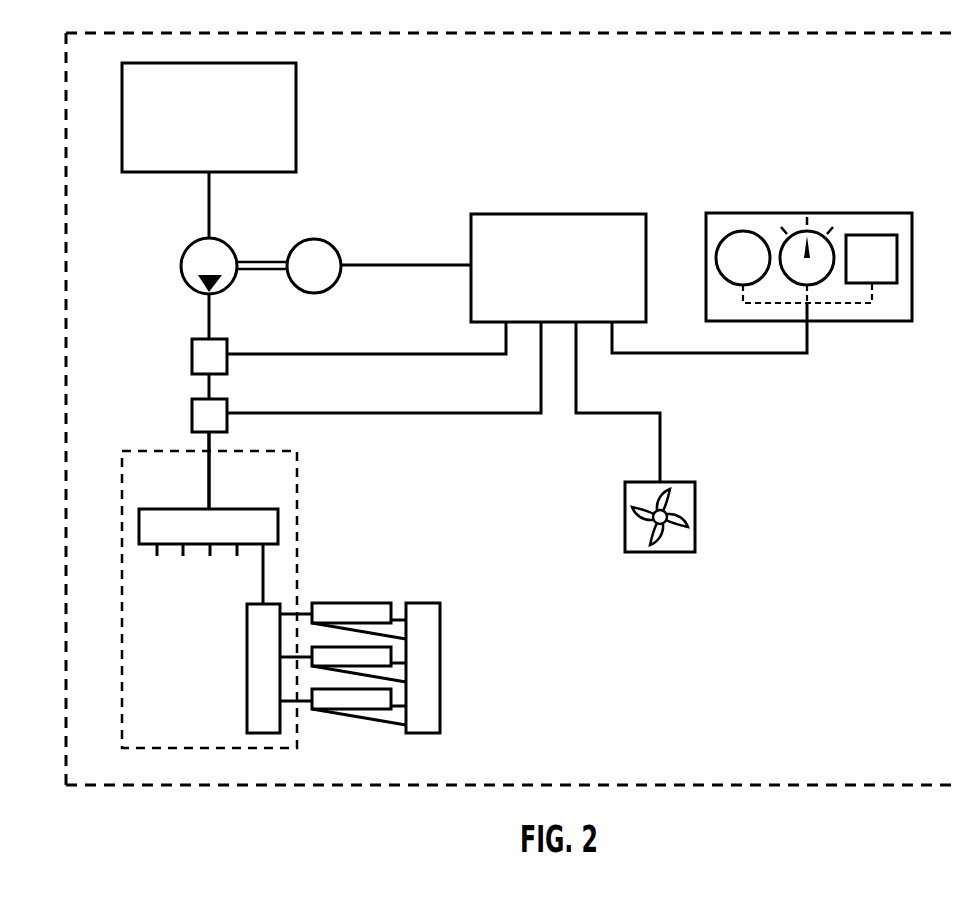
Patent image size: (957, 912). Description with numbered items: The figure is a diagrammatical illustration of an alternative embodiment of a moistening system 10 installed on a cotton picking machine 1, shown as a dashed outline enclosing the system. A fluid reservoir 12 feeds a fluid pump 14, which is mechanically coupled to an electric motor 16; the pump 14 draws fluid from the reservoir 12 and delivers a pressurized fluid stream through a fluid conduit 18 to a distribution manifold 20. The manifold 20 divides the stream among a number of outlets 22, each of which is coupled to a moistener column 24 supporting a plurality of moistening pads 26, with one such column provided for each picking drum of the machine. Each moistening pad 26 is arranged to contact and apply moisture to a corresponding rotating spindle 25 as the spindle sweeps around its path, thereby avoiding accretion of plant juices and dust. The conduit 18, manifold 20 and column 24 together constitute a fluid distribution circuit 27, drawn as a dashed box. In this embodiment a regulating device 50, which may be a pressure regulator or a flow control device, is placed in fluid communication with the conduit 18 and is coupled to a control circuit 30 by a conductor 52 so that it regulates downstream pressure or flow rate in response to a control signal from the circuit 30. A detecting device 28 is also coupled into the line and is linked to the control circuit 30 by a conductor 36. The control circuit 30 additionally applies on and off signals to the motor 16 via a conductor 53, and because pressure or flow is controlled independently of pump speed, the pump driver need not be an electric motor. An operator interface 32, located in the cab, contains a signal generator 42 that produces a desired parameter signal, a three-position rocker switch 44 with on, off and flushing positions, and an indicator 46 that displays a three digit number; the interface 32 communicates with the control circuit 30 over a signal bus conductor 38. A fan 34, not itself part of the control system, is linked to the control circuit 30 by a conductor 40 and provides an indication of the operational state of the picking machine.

The cotton picking machine 1 is at (231, 786).
The moistening system 10 is at (580, 93).
The fluid reservoir 12 is at (296, 106).
The fluid pump 14 is at (236, 256).
The electric motor 16 is at (341, 256).
The fluid conduit 18 is at (212, 500).
The distribution manifold 20 is at (178, 509).
The outlets 22 is at (262, 562).
The moistener column 24 is at (247, 652).
The spindle 25 is at (390, 670).
The moistening pads 26 is at (346, 655).
The fluid distribution circuit 27 is at (297, 492).
The detecting device 28 is at (227, 408).
The control circuit 30 is at (646, 258).
The operator interface 32 is at (827, 239).
The fan 34 is at (695, 500).
The conductor 36 is at (405, 413).
The conductor 38 is at (660, 353).
The conductor 40 is at (607, 413).
The signal generator 42 is at (745, 232).
The switch 44 is at (813, 232).
The indicator 46 is at (870, 235).
The regulating device 50 is at (227, 347).
The conductor 52 is at (405, 354).
The conductor 53 is at (405, 265).